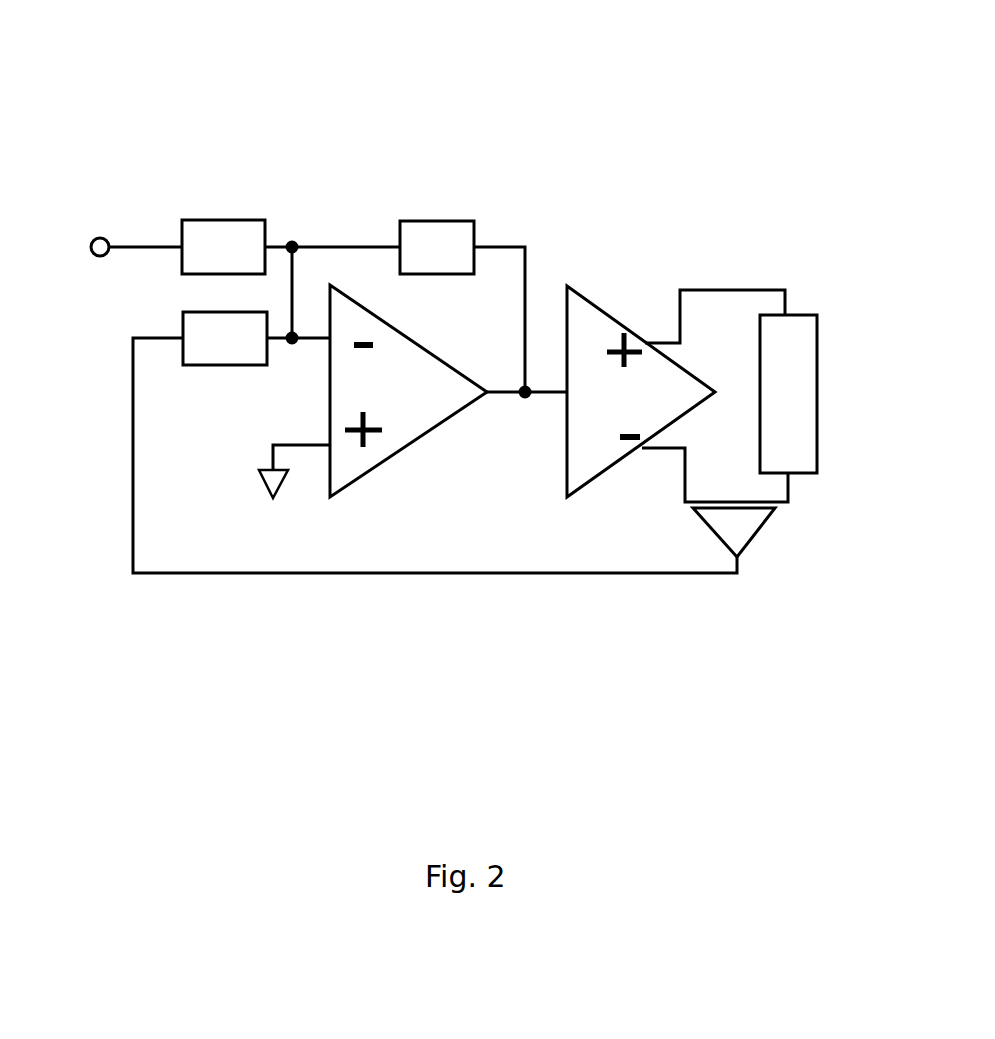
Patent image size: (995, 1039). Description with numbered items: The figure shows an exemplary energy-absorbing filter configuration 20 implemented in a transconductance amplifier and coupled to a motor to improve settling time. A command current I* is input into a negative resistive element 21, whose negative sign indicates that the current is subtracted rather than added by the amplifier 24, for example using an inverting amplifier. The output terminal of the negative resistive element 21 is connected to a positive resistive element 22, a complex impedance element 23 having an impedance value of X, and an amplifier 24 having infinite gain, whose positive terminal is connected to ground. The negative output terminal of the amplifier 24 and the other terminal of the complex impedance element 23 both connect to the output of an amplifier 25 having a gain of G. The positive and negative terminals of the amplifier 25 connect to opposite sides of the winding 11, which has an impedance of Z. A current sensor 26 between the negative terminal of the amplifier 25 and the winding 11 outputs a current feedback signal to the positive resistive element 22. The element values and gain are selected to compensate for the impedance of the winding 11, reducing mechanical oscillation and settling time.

The energy-absorbing filter configuration 20 is at (556, 108).
The negative resistive element 21 is at (228, 220).
The positive resistive element 22 is at (183, 324).
The complex impedance element 23 is at (440, 220).
The amplifier 24 is at (402, 450).
The amplifier 25 is at (622, 323).
The current sensor 26 is at (747, 543).
The winding 11 is at (817, 377).